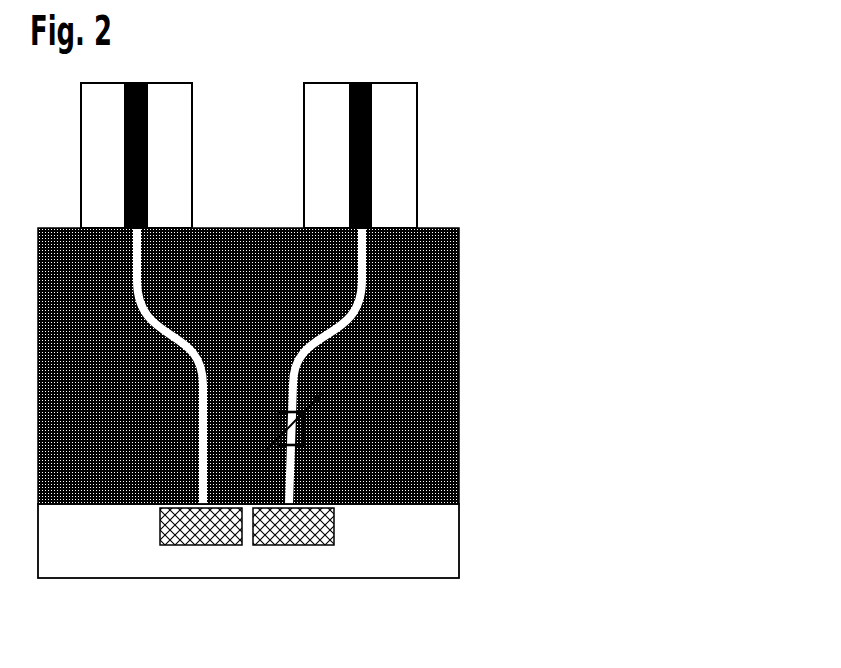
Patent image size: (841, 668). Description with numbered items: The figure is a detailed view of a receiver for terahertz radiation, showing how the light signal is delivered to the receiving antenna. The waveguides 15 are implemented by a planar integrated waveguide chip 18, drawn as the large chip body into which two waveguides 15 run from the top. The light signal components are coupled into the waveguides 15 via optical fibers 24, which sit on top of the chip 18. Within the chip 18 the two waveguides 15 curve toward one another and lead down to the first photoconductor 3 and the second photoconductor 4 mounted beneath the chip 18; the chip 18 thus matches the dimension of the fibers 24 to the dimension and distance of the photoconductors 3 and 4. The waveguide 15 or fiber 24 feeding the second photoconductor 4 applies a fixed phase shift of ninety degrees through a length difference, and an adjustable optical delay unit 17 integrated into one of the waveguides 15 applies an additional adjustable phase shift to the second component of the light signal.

The first photoconductor 3 is at (183, 537).
The second photoconductor 4 is at (303, 537).
The waveguides 15 is at (317, 345).
The adjustable optical delay unit 17 is at (303, 432).
The planar integrated waveguide chip 18 is at (440, 305).
The optical fibers 24 is at (313, 123).